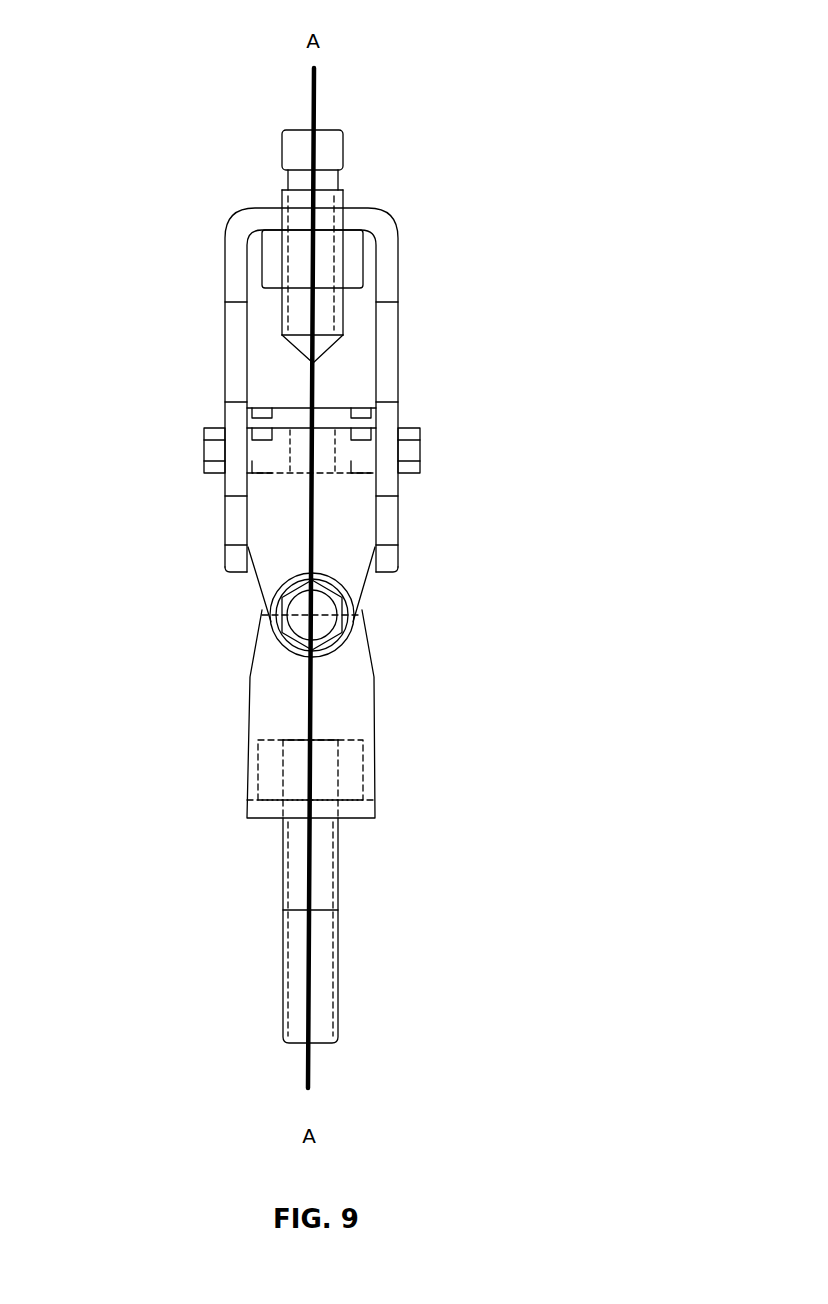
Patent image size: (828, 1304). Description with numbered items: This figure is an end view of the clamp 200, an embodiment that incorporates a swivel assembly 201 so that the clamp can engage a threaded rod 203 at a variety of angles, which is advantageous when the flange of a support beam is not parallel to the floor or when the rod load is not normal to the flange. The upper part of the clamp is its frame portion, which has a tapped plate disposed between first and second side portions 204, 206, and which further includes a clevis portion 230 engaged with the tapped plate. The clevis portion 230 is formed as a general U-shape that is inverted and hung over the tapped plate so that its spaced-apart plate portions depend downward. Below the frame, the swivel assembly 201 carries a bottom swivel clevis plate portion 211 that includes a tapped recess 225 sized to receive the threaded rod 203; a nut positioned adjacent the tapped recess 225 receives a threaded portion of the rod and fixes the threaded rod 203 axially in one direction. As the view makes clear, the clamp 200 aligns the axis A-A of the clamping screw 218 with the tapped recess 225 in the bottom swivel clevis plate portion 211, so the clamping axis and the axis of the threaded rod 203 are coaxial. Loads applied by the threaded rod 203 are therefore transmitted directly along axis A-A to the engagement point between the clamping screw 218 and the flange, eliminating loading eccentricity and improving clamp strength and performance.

The clamp 200 is at (530, 183).
The clamping screw 218 is at (335, 138).
The first side portion 204 is at (223, 288).
The second side portion 206 is at (399, 268).
The clevis portion 230 is at (253, 503).
The swivel assembly 201 is at (492, 700).
The bottom swivel clevis plate portion 211 is at (262, 806).
The tapped recess 225 is at (333, 810).
The threaded rod 203 is at (283, 874).